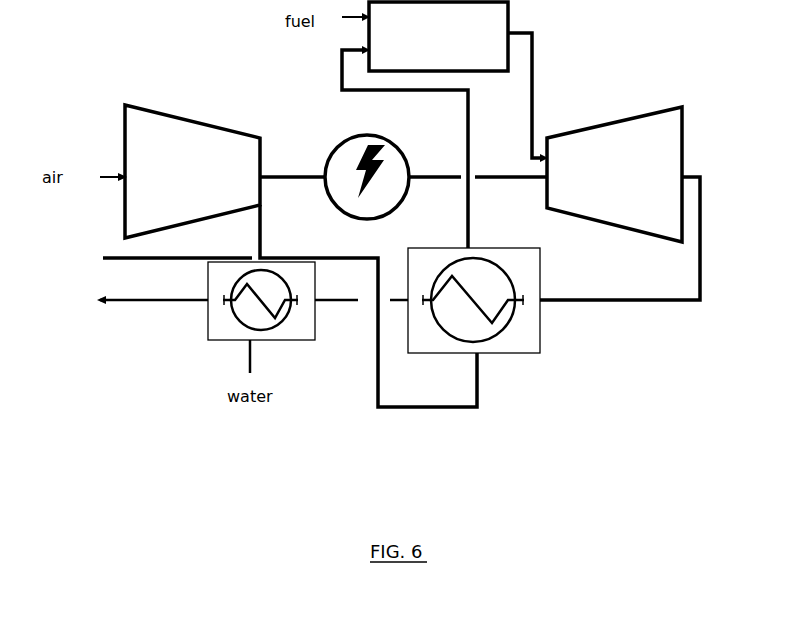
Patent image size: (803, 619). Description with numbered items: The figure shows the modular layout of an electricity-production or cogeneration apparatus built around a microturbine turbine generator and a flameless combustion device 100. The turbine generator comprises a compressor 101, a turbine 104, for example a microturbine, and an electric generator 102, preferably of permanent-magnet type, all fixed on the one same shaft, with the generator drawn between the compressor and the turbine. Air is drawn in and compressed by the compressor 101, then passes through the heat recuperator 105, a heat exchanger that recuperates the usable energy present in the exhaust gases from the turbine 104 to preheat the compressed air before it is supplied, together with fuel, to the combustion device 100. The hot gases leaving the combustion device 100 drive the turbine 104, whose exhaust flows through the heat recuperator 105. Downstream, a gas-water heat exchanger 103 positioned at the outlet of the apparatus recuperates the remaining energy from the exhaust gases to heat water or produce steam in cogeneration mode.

The flameless combustion device 100 is at (443, 45).
The compressor 101 is at (210, 188).
The electric generator 102 is at (328, 134).
The gas-water heat exchanger 103 is at (290, 360).
The turbine 104 is at (642, 181).
The heat recuperator 105 is at (546, 334).